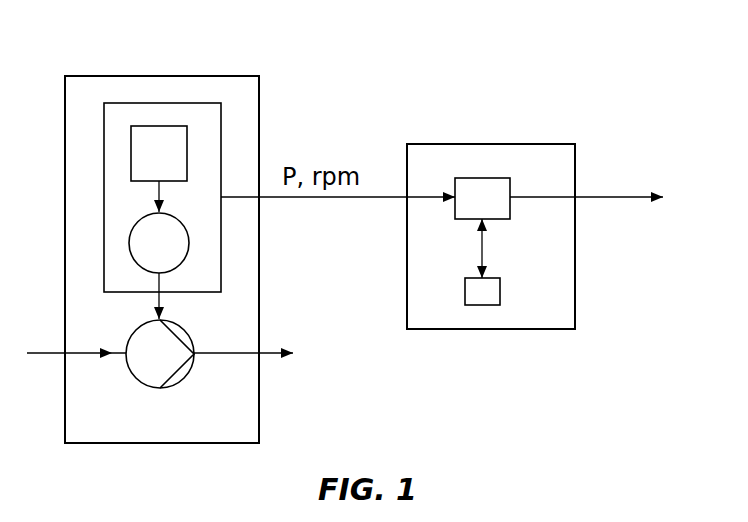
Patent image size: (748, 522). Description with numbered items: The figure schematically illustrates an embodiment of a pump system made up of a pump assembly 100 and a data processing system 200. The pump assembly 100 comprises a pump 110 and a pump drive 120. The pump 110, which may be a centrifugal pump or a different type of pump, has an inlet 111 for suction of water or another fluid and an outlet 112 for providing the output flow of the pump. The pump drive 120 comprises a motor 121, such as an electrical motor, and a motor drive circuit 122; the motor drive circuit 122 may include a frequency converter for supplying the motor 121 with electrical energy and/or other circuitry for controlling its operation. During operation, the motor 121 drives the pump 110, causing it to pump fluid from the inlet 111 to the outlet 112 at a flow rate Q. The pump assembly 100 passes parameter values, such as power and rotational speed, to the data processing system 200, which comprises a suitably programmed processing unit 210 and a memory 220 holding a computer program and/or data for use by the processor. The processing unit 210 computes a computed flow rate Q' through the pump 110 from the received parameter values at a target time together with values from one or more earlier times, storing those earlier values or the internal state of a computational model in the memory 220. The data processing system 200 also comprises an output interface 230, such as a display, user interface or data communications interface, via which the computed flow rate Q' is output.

The pump assembly 100 is at (148, 444).
The pump 110 is at (136, 378).
The inlet 111 is at (113, 347).
The outlet 112 is at (210, 357).
The pump drive 120 is at (160, 103).
The motor 121 is at (190, 243).
The motor drive circuit 122 is at (171, 126).
The data processing system 200 is at (492, 330).
The processing unit 210 is at (482, 178).
The memory 220 is at (500, 292).
The output interface 230 is at (583, 196).